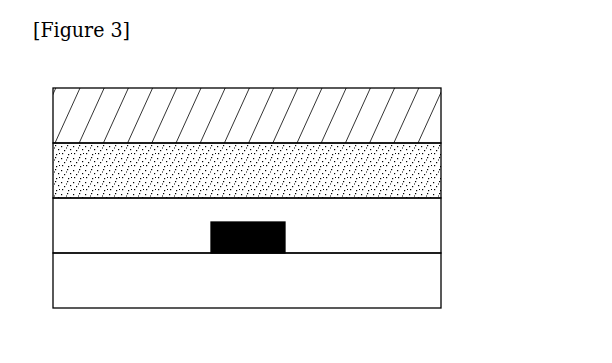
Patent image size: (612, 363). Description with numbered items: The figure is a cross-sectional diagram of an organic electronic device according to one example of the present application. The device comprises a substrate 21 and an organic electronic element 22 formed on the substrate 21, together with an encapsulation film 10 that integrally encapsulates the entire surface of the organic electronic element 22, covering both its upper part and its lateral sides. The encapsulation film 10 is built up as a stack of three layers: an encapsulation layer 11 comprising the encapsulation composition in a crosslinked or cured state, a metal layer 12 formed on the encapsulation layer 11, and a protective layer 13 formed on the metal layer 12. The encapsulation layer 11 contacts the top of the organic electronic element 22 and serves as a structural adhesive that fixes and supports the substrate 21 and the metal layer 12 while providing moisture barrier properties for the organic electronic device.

The encapsulation film 10 is at (280, 170).
The encapsulation layer 11 is at (270, 225).
The metal layer 12 is at (441, 168).
The protective layer 13 is at (441, 116).
The substrate 21 is at (441, 283).
The organic electronic element 22 is at (245, 254).